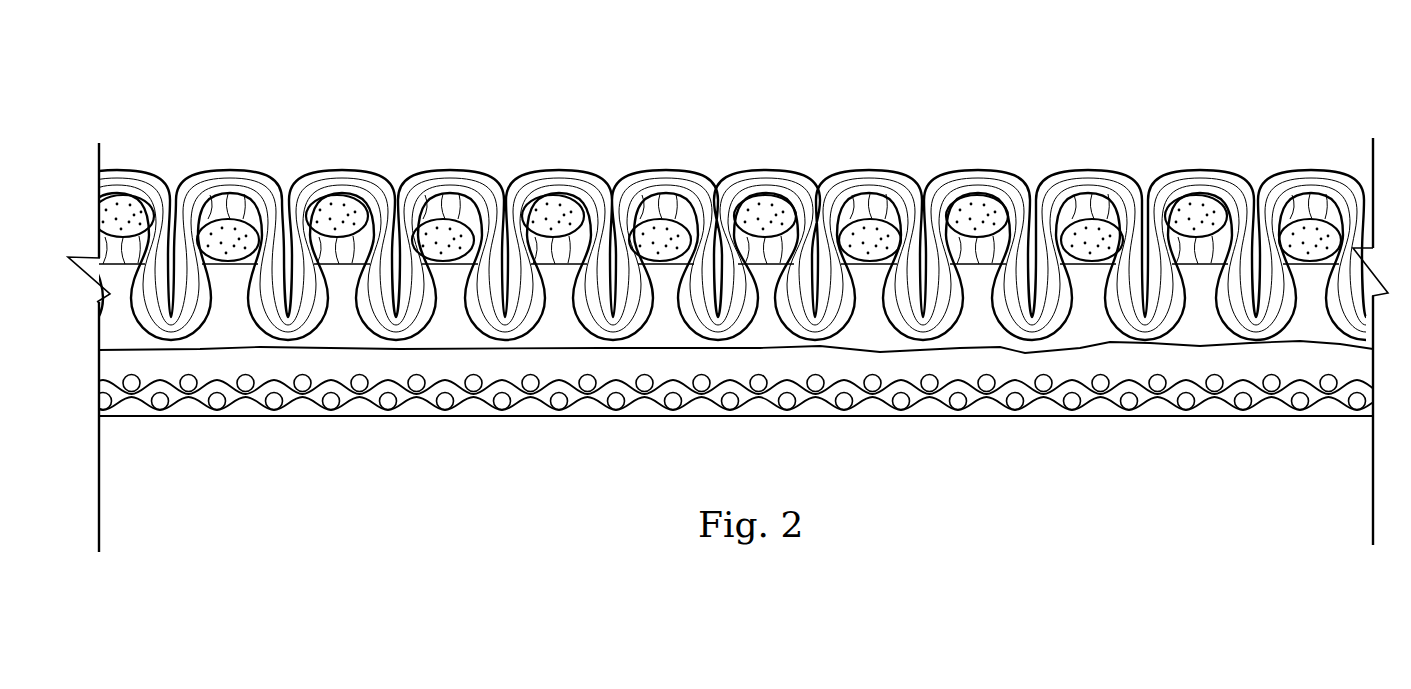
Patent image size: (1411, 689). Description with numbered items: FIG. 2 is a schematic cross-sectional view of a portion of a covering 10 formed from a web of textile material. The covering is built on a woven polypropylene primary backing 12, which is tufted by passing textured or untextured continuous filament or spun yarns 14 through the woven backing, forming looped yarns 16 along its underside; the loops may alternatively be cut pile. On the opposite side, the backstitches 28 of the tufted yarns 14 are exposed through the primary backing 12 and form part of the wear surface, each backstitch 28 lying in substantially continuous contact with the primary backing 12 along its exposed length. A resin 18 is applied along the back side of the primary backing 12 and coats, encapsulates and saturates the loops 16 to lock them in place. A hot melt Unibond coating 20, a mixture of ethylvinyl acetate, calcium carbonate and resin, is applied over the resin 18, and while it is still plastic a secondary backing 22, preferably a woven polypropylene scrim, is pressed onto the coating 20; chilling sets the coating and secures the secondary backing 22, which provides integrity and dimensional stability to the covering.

The composite textile fabric 10 is at (290, 116).
The primary backing 12 is at (866, 216).
The yarns 14 is at (1067, 170).
The looped yarns 16 is at (1148, 323).
The resin 18 is at (760, 313).
The Unibond coating 20 is at (1030, 363).
The secondary backing 22 is at (592, 403).
The backstitches 28 is at (1200, 170).